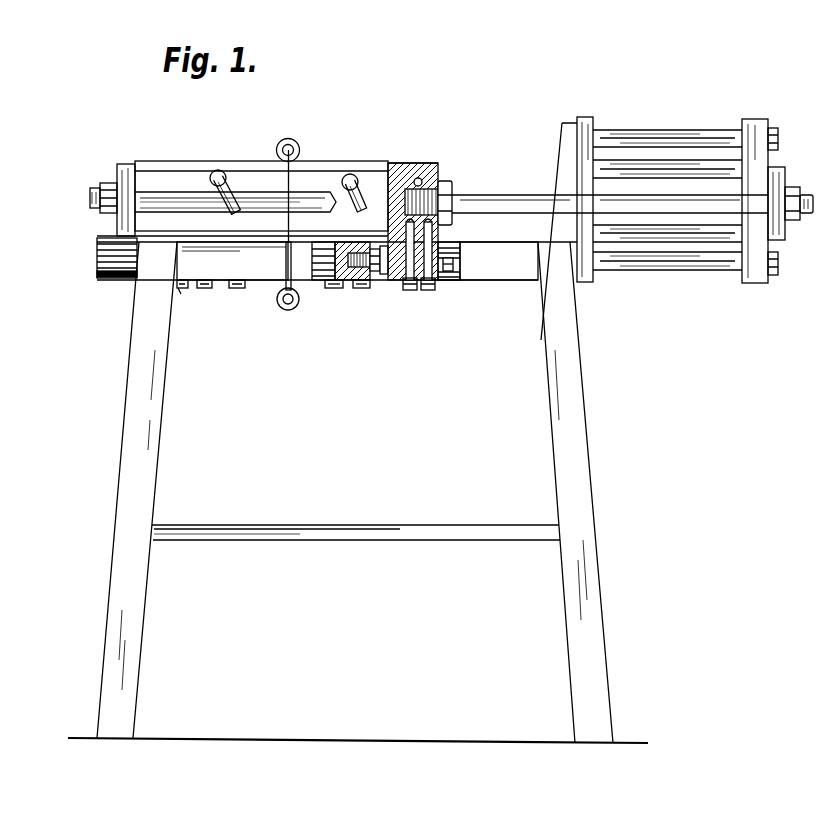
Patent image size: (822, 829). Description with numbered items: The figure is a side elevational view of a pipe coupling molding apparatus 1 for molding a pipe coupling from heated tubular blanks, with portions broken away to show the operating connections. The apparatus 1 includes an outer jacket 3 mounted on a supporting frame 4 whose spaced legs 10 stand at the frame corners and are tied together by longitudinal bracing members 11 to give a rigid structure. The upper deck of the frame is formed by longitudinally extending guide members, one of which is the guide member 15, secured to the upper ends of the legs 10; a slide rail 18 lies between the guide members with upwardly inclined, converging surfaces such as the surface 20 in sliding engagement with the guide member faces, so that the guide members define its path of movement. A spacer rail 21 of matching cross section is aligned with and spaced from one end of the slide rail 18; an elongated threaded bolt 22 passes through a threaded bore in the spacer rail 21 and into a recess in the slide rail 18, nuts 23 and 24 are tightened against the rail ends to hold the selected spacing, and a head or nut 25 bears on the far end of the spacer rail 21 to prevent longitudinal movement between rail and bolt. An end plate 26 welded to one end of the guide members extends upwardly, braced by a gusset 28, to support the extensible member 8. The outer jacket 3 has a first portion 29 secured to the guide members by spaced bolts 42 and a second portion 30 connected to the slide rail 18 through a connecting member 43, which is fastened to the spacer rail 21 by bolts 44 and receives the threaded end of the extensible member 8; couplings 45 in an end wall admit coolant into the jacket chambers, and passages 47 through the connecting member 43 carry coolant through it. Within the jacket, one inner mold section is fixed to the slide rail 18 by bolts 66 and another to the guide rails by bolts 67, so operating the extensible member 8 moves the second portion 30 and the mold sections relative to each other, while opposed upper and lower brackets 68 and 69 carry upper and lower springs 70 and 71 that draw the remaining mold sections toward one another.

The pipe coupling molding apparatus 1 is at (446, 136).
The outer jacket 3 is at (333, 182).
The supporting frame 4 is at (587, 406).
The extensible member 8 is at (483, 190).
The legs 10 is at (157, 483).
The longitudinal bracing members 11 is at (418, 525).
The guide member 15 is at (500, 278).
The slide rail 18 is at (99, 268).
The surface 20 is at (124, 256).
The spacer rail 21 is at (437, 289).
The threaded shaft or bolt 22 is at (381, 285).
The nut 23 is at (375, 282).
The nut 24 is at (388, 272).
The head or nut 25 is at (450, 272).
The end plate 26 is at (585, 117).
The gusset 28 is at (557, 141).
The first portion 29 is at (184, 147).
The second portion 30 is at (303, 163).
The screws or bolts 42 is at (179, 287).
The connecting member 43 is at (392, 167).
The bolts 44 is at (426, 288).
The couplings 45 is at (218, 171).
The passages 47 is at (422, 183).
The screws or bolts 66 is at (240, 283).
The screws or bolts 67 is at (331, 286).
The upper bracket 68 is at (283, 140).
The lower bracket 69 is at (286, 261).
The upper spring 70 is at (297, 139).
The lower spring 71 is at (283, 306).